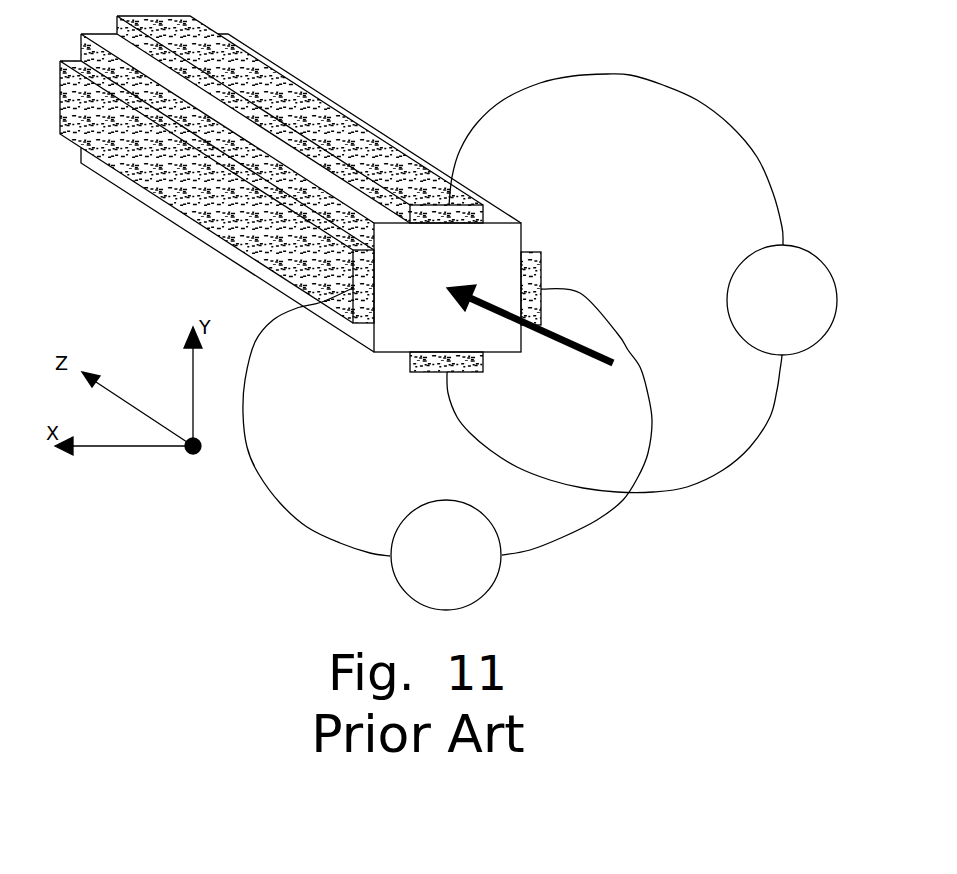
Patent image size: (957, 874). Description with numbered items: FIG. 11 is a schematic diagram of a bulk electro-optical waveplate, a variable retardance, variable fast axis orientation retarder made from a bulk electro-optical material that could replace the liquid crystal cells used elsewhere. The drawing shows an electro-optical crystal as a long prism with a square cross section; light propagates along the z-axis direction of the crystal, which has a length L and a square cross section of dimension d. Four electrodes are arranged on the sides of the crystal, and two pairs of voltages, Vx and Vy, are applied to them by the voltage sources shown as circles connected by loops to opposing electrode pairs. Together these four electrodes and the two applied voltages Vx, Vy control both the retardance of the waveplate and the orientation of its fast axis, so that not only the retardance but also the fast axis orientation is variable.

The length L is at (356, 352).
The dimension d is at (521, 390).
The voltage Vx is at (447, 449).
The voltage Vy is at (642, 283).